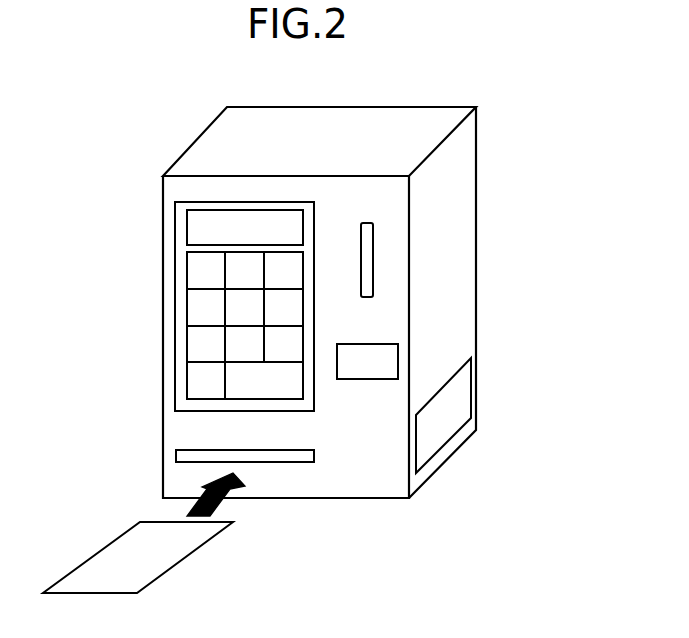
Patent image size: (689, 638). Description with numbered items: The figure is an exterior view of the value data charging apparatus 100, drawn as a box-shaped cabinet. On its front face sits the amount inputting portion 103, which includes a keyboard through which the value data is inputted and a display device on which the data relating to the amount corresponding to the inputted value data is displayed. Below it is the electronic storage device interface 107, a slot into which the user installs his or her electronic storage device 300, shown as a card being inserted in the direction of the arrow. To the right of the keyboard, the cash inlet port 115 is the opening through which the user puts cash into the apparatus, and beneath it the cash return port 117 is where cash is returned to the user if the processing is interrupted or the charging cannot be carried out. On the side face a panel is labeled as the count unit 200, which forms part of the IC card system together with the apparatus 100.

The value data charging apparatus 100 is at (448, 107).
The amount inputting portion 103 is at (175, 308).
The electronic storage device interface 107 is at (298, 445).
The cash inlet port 115 is at (373, 260).
The cash return port 117 is at (398, 358).
The count unit 200 is at (473, 384).
The electronic storage device 300 is at (183, 558).